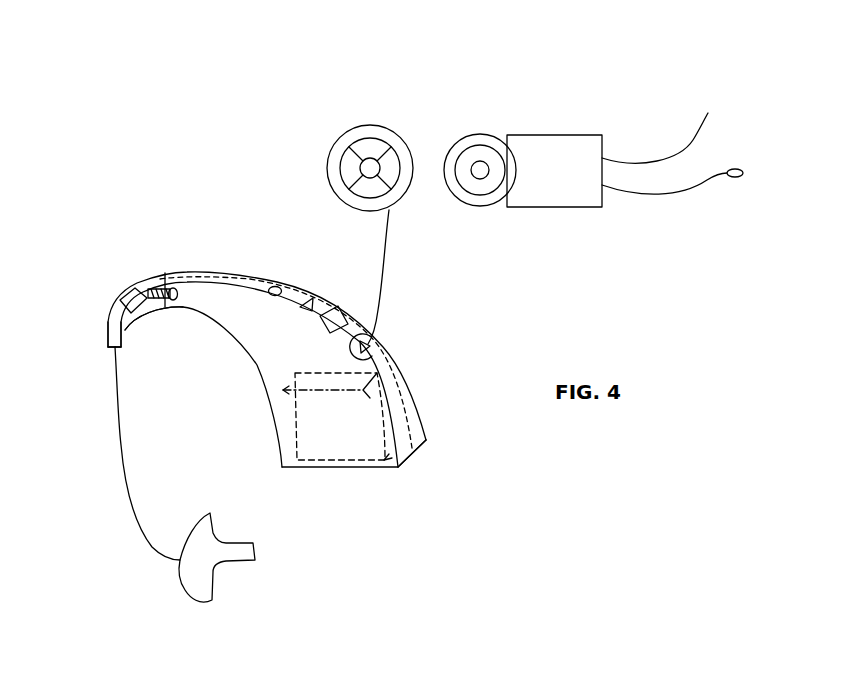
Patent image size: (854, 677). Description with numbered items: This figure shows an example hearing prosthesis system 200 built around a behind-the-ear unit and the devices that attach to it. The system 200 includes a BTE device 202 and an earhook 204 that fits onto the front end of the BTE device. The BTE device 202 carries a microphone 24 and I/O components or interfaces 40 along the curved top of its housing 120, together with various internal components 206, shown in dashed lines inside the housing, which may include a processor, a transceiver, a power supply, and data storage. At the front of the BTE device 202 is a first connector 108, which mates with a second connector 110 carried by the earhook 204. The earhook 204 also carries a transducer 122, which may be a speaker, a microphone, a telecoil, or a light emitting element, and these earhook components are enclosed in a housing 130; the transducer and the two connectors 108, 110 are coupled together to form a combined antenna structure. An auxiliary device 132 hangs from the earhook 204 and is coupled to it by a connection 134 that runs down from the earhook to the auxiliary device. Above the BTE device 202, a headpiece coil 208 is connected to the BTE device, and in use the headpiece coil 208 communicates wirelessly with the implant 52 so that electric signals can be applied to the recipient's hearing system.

The hearing prosthesis system 200 is at (200, 156).
The headpiece coil 208 is at (385, 127).
The implant device 52 is at (509, 134).
The second connector 110 is at (158, 290).
The first connector 108 is at (175, 290).
The transducer 122 is at (123, 312).
The earhook 204 is at (107, 338).
The housing 130 is at (127, 331).
The microphone 24 is at (277, 288).
The I/O components or interfaces 40 is at (308, 302).
The housing 120 is at (422, 422).
The BTE device 202 is at (340, 469).
The internal components 206 is at (397, 468).
The connection 134 is at (118, 438).
The auxiliary device 132 is at (213, 577).